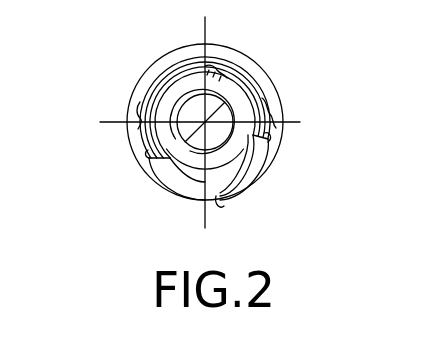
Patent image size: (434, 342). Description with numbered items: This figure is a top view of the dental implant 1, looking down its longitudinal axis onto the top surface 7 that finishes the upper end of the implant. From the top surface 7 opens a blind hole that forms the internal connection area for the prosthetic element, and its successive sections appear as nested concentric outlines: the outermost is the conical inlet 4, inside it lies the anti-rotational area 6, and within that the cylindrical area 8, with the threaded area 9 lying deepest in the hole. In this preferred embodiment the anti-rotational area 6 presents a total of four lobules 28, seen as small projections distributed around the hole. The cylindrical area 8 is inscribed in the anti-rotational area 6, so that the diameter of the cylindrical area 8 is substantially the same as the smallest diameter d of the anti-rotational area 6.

The dental implant 1 is at (268, 66).
The conical inlet 4 is at (157, 86).
The anti-rotational area 6 is at (212, 63).
The top surface 7 is at (160, 68).
The cylindrical area 8 is at (272, 141).
The threaded area 9 is at (147, 162).
The lobules 28 is at (138, 110).
The smallest diameter d is at (205, 122).